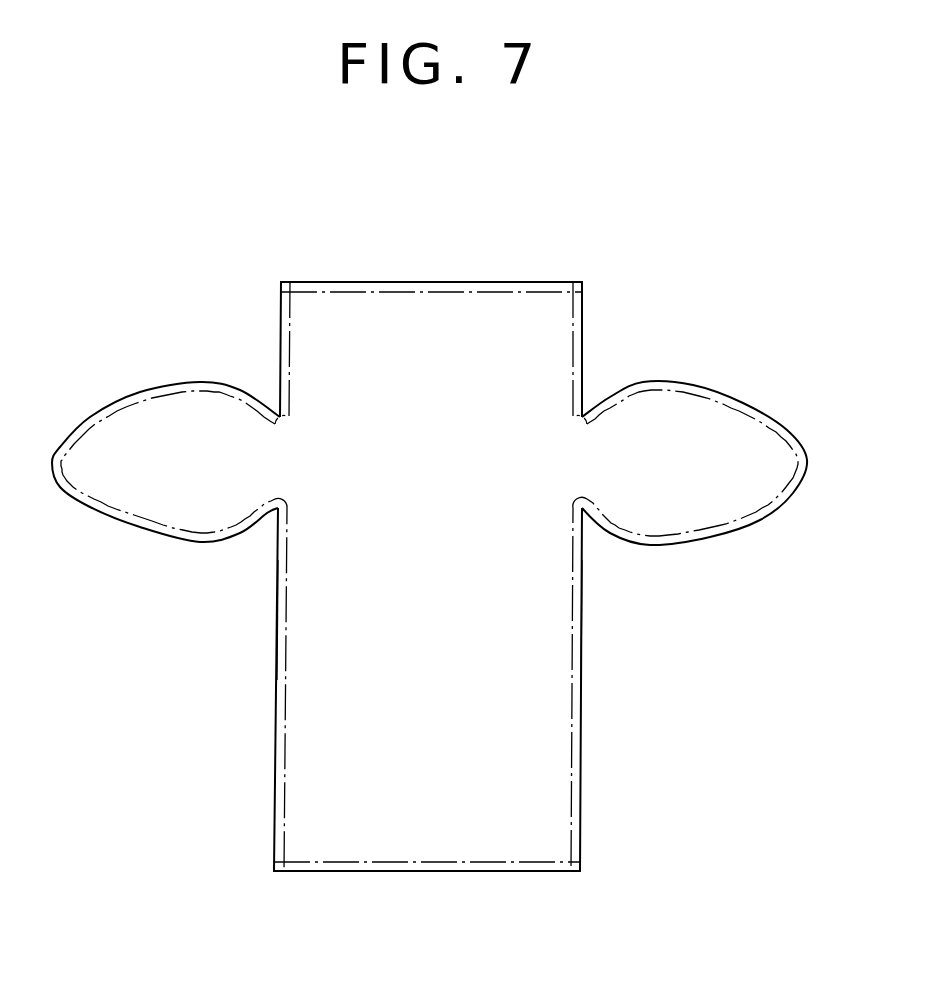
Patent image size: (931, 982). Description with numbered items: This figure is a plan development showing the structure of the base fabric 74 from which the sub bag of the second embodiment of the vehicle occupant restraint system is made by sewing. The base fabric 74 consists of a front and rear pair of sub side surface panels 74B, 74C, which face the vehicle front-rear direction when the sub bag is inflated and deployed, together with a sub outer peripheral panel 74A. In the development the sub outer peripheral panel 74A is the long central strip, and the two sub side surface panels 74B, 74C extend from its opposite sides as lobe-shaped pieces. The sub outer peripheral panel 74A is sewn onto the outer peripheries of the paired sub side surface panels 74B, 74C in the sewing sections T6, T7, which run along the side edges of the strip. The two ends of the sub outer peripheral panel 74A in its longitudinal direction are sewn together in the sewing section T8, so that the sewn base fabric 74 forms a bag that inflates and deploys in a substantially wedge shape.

The base fabric 74 is at (547, 777).
The sub outer peripheral panel 74A is at (317, 725).
The sub side surface panel 74B is at (158, 417).
The sub side surface panel 74C is at (698, 420).
The sewing section T6 is at (285, 619).
The sewing section T7 is at (572, 619).
The sewing section T8 is at (415, 292).